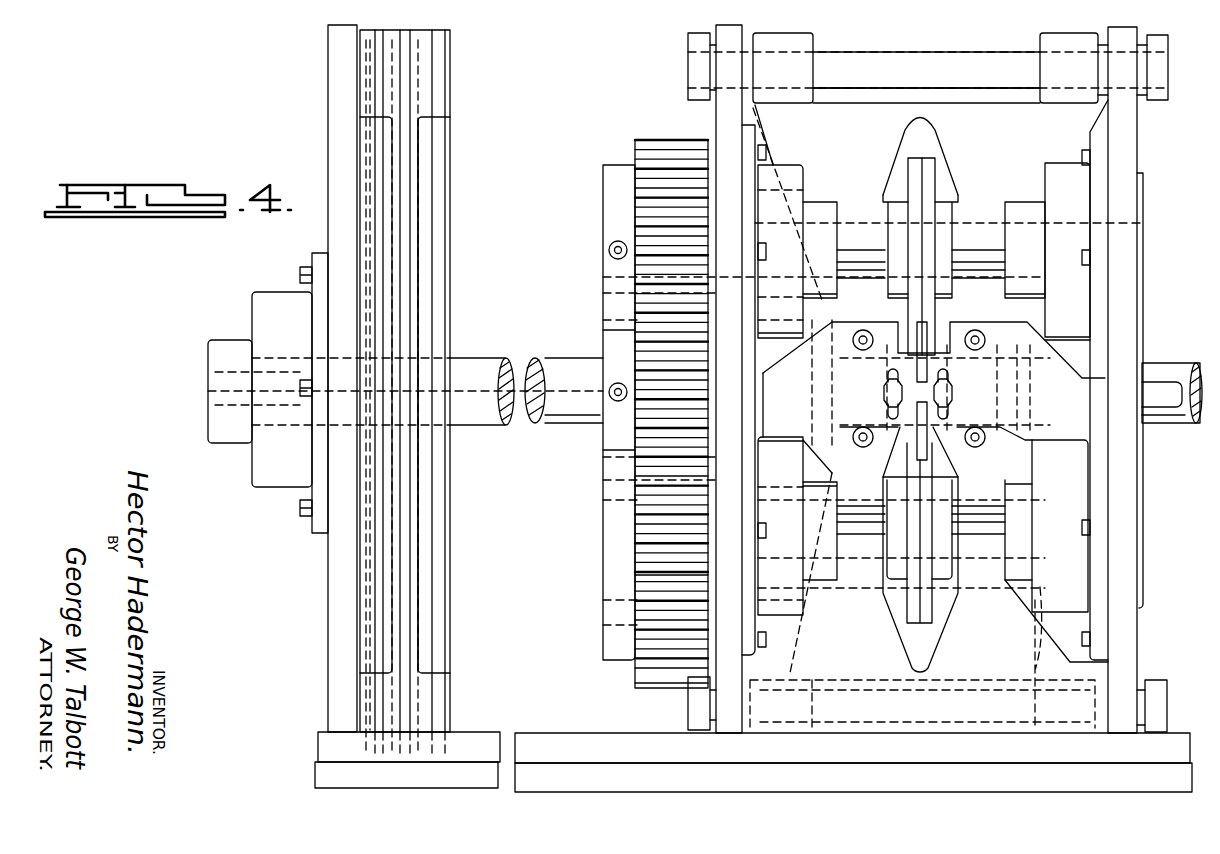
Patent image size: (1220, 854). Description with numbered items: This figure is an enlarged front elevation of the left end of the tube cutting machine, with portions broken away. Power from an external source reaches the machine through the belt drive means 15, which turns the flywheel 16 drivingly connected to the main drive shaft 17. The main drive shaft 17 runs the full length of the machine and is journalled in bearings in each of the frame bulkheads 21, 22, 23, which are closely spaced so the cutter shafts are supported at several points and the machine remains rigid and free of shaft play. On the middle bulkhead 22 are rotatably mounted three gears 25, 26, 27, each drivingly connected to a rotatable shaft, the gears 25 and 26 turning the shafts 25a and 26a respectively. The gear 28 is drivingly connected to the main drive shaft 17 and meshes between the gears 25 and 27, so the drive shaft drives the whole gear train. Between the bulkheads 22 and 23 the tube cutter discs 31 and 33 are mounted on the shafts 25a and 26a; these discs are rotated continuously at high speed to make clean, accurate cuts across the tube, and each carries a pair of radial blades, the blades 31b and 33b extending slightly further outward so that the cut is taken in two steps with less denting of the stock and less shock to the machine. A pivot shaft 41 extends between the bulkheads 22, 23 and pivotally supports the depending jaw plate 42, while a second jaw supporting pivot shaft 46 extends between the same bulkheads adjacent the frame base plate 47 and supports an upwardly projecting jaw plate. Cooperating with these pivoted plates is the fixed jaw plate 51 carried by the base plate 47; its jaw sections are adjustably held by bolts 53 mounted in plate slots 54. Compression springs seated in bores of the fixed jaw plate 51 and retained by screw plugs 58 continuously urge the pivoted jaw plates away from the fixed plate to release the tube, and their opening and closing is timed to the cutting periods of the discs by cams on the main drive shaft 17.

The belt drive means 15 is at (470, 208).
The flywheel 16 is at (452, 98).
The main drive shaft 17 is at (520, 356).
The frame bulkhead 21 is at (340, 48).
The middle bulkhead 22 is at (724, 112).
The frame bulkhead 23 is at (1138, 118).
The gear 25 is at (640, 152).
The rotatable shaft 25a is at (851, 220).
The gear 26 is at (640, 574).
The rotatable shaft 26a is at (822, 598).
The gear 27 is at (664, 686).
The gear 28 is at (645, 416).
The tube cutter disc 31 is at (928, 168).
The cutter blade 31b is at (925, 355).
The tube cutter disc 33 is at (938, 610).
The cutter blade 33b is at (928, 413).
The pivot shaft 41 is at (930, 50).
The jaw plate 42 is at (884, 76).
The jaw supporting pivot shaft 46 is at (868, 720).
The base plate 47 is at (533, 740).
The fixed jaw plate 51 is at (1036, 624).
The bolt 53 is at (950, 392).
The plate slot 54 is at (890, 378).
The screw plug 58 is at (863, 330).